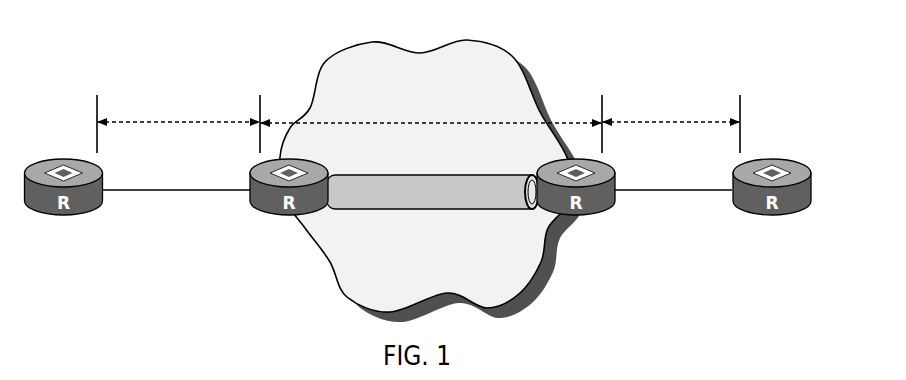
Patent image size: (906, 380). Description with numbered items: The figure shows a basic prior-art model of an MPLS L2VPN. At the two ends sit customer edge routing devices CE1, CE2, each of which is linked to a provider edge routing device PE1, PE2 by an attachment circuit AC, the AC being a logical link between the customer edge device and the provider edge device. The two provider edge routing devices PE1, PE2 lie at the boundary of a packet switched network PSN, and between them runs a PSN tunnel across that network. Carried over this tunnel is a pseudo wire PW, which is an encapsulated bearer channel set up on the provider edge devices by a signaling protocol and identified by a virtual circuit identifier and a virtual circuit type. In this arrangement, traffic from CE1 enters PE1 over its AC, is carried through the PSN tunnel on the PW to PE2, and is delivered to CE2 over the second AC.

The customer edge routing device CE1 is at (64, 203).
The provider edge routing device PE1 is at (282, 203).
The provider edge routing device PE2 is at (576, 202).
The customer edge routing device CE2 is at (772, 202).
The attachment circuit AC is at (418, 142).
The pseudo wire PW is at (431, 109).
The packet switched network PSN is at (432, 181).
The packet switched network tunnel PSN tunnel is at (433, 192).